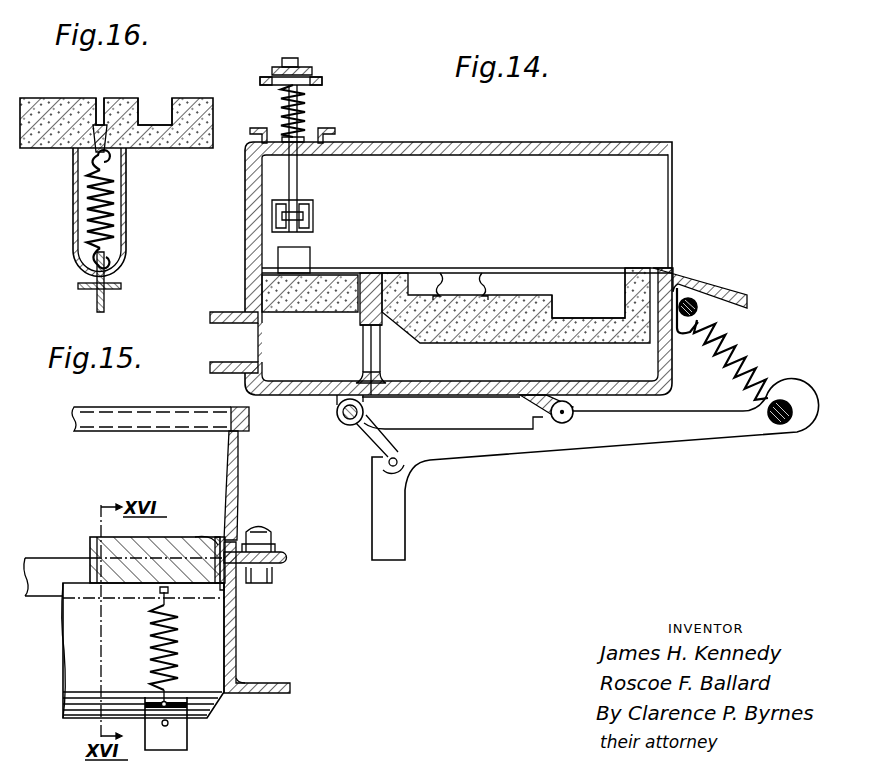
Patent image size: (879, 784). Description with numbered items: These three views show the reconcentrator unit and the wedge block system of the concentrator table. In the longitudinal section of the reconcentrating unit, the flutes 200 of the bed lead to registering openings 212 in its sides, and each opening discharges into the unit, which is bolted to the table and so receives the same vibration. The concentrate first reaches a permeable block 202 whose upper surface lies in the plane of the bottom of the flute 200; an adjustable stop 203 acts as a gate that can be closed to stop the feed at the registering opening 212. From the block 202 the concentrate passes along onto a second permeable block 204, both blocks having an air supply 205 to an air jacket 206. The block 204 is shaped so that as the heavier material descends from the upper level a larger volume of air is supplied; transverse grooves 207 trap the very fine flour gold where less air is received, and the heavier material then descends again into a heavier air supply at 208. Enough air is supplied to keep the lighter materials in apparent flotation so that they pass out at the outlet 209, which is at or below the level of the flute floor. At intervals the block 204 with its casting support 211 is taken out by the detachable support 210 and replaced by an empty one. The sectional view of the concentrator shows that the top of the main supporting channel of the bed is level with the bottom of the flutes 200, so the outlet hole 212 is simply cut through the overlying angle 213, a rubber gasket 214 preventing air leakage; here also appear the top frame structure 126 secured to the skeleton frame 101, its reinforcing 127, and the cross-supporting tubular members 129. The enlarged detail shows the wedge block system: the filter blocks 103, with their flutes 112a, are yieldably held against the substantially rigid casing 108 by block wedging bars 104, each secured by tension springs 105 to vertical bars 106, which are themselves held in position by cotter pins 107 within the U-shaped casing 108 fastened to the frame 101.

In FIG. 15, the skeleton frame 101 is at (213, 646).
In FIG. 16, the filter blocks 103 is at (75, 83).
In FIG. 16, the block wedging bars 104 is at (107, 122).
In FIG. 15, the tension springs 105 is at (150, 644).
In FIG. 16, the tension springs 105 is at (110, 205).
In FIG. 15, the vertical bars 106 is at (190, 740).
In FIG. 16, the vertical bars 106 is at (97, 309).
In FIG. 15, the cotter pins 107 is at (190, 723).
In FIG. 16, the cotter pins 107 is at (121, 287).
In FIG. 15, the U-shaped casing 108 is at (78, 690).
In FIG. 16, the U-shaped casing 108 is at (126, 235).
In FIG. 16, the flutes 112a is at (150, 122).
In FIG. 15, the top frame structure 126 is at (240, 456).
In FIG. 15, the reinforcing 127 is at (250, 415).
In FIG. 15, the tubular members 129 is at (120, 433).
In FIG. 15, the flutes 200 is at (90, 553).
In FIG. 14, the permeable block 202 is at (322, 300).
In FIG. 14, the adjustable stop 203 is at (297, 177).
In FIG. 14, the permeable block 204 is at (531, 337).
In FIG. 14, the air supply 205 is at (228, 333).
In FIG. 14, the air jacket 206 is at (379, 359).
In FIG. 14, the transverse grooves 207 is at (478, 278).
In FIG. 14, the heavier air supply region 208 is at (562, 310).
In FIG. 14, the reconcentrator outlet 209 is at (662, 264).
In FIG. 14, the detachable support 210 is at (618, 452).
In FIG. 14, the casting support 211 is at (466, 392).
In FIG. 14, the registering openings 212 is at (292, 257).
In FIG. 15, the registering openings 212 is at (212, 538).
In FIG. 15, the overlying angle 213 is at (288, 541).
In FIG. 15, the rubber gasket 214 is at (222, 588).